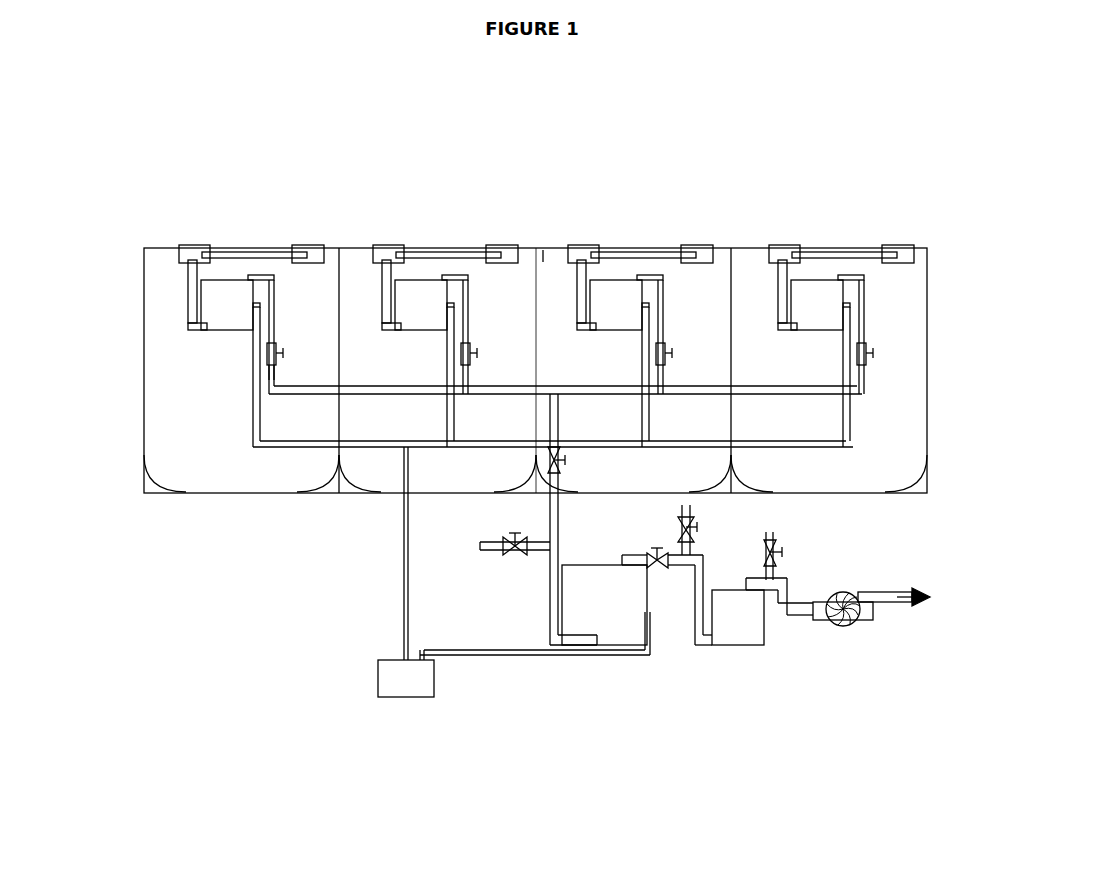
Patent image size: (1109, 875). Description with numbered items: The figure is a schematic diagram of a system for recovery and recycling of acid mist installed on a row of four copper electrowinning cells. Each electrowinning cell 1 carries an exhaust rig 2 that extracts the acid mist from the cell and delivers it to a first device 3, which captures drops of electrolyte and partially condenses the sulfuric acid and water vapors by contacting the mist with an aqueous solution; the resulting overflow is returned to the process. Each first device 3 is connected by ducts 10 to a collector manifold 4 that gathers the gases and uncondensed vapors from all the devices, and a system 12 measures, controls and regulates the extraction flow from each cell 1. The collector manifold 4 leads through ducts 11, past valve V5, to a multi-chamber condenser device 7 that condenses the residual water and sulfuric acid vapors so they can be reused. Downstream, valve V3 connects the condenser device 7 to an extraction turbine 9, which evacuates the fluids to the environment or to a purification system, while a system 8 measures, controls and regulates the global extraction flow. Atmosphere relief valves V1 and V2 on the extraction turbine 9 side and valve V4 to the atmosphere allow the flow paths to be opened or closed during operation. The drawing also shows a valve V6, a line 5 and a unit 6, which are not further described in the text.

The electrowinning cell 1 is at (166, 333).
The exhaust rig 2 is at (237, 256).
The first device 3 is at (230, 303).
The collector manifold 4 is at (318, 391).
The lower return pipe 5 is at (258, 402).
The pump 6 is at (435, 670).
The multi-chamber condenser device 7 is at (612, 615).
The system for measurement, control and regulation of global flow 8 is at (735, 615).
The extraction turbine 9 is at (851, 622).
The ducts 10 is at (272, 325).
The ducts 11 is at (552, 603).
The system for measurement, control and regulation of extraction flow 12 is at (270, 357).
The atmosphere relief valve V1 is at (785, 553).
The atmosphere relief valve V2 is at (699, 527).
The valve V3 is at (659, 570).
The valve V4 is at (512, 553).
The valve V5 is at (548, 463).
The valve V6 is at (282, 352).